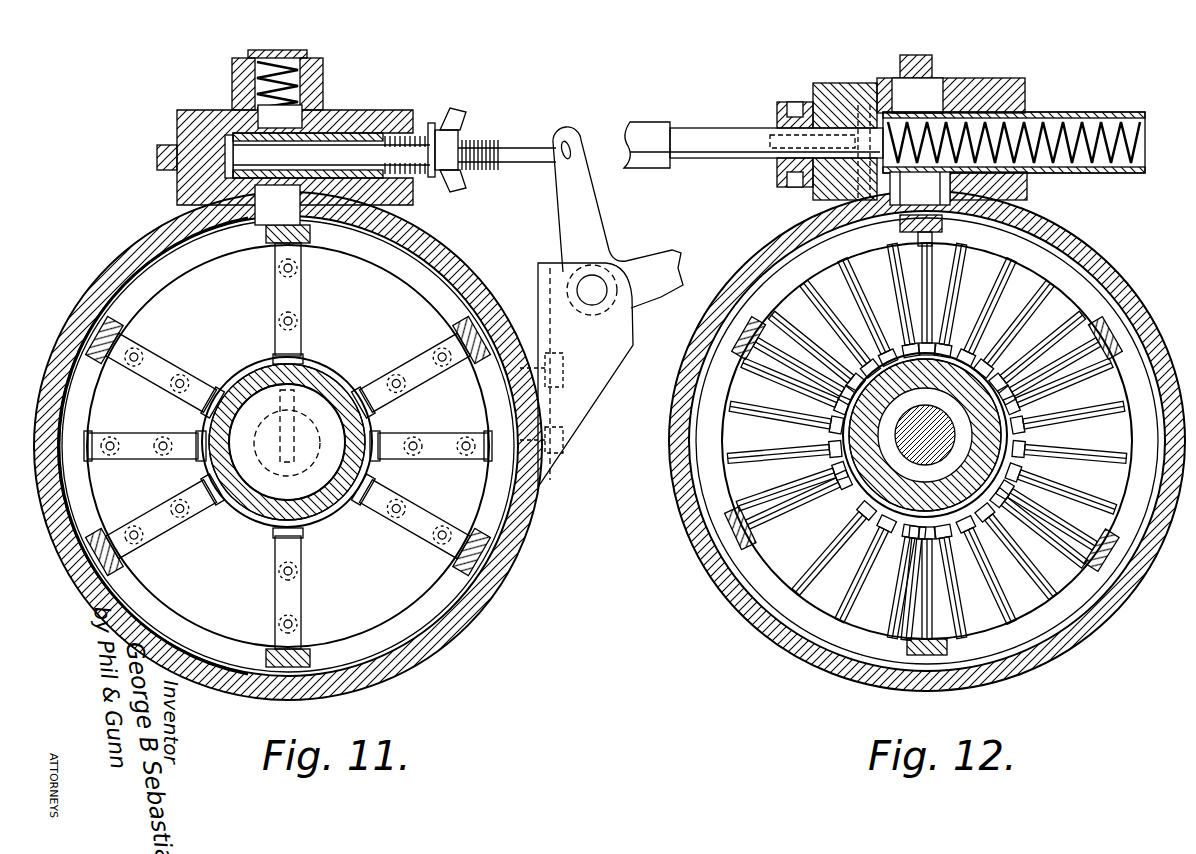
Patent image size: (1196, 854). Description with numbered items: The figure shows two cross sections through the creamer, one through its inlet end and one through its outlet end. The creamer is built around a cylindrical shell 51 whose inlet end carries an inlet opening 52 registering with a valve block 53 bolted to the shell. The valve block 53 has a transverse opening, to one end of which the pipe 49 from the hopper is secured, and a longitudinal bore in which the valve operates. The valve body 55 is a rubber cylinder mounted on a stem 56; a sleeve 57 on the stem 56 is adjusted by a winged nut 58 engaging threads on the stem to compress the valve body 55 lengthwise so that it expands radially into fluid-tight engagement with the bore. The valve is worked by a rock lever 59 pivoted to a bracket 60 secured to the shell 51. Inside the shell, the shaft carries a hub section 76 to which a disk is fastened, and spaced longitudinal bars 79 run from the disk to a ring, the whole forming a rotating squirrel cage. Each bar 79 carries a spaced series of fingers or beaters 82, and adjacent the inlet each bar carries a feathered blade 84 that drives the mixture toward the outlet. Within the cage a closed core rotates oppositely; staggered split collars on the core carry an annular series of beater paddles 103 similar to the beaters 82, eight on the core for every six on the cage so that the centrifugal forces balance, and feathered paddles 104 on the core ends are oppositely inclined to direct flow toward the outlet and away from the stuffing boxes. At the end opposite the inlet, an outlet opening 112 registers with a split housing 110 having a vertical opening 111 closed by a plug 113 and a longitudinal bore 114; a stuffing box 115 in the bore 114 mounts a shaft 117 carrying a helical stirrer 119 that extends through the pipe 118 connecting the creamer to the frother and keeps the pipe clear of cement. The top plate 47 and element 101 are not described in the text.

In FIG. 11, the spring cap plate 47 is at (250, 54).
In FIG. 11, the pipe 49 is at (318, 62).
In FIG. 11, the cylindrical shell 51 is at (476, 583).
In FIG. 12, the cylindrical shell 51 is at (1160, 437).
In FIG. 11, the inlet opening 52 is at (304, 246).
In FIG. 11, the valve block 53 is at (376, 108).
In FIG. 11, the valve body 55 is at (322, 110).
In FIG. 11, the stem 56 is at (430, 122).
In FIG. 11, the sleeve 57 is at (455, 120).
In FIG. 11, the winged nut 58 is at (445, 140).
In FIG. 11, the rock lever 59 is at (162, 152).
In FIG. 11, the bracket 60 is at (576, 375).
In FIG. 11, the hub section 76 is at (472, 481).
In FIG. 11, the feathered blade 84 is at (181, 374).
In FIG. 11, the feathered paddles 104 is at (152, 422).
In FIG. 12, the longitudinal bars 79 is at (1107, 310).
In FIG. 12, the fingers or beaters 82 is at (936, 280).
In FIG. 12, the hub 101 is at (893, 332).
In FIG. 12, the beater paddles 103 is at (900, 284).
In FIG. 12, the split housing 110 is at (985, 107).
In FIG. 12, the vertical opening 111 is at (893, 222).
In FIG. 12, the outlet opening 112 is at (940, 200).
In FIG. 12, the plug 113 is at (930, 90).
In FIG. 12, the longitudinal bore 114 is at (840, 100).
In FIG. 12, the stuffing box 115 is at (800, 98).
In FIG. 12, the shaft 117 is at (733, 156).
In FIG. 12, the pipe 118 is at (1095, 110).
In FIG. 12, the helical stirrer 119 is at (1130, 112).